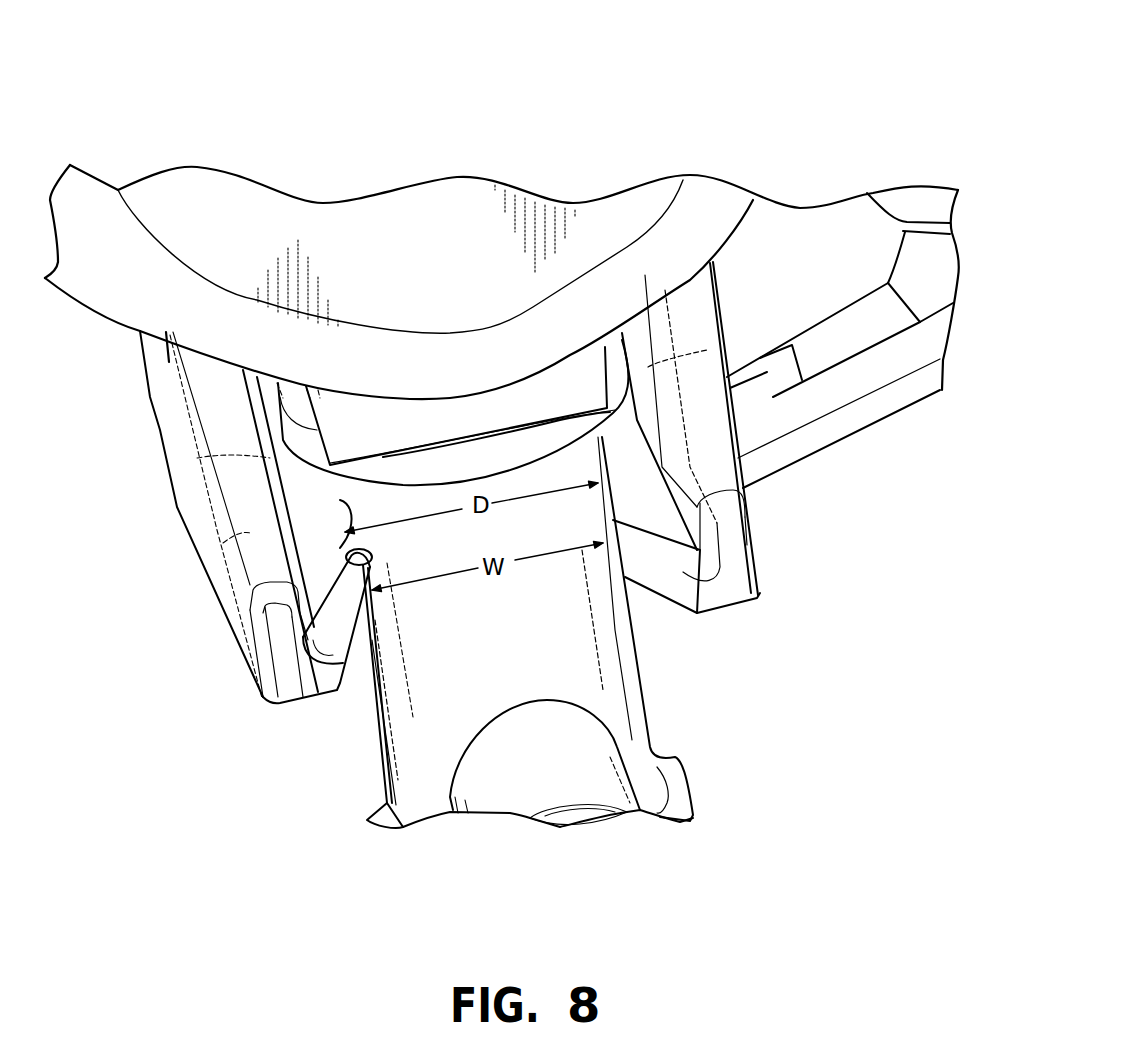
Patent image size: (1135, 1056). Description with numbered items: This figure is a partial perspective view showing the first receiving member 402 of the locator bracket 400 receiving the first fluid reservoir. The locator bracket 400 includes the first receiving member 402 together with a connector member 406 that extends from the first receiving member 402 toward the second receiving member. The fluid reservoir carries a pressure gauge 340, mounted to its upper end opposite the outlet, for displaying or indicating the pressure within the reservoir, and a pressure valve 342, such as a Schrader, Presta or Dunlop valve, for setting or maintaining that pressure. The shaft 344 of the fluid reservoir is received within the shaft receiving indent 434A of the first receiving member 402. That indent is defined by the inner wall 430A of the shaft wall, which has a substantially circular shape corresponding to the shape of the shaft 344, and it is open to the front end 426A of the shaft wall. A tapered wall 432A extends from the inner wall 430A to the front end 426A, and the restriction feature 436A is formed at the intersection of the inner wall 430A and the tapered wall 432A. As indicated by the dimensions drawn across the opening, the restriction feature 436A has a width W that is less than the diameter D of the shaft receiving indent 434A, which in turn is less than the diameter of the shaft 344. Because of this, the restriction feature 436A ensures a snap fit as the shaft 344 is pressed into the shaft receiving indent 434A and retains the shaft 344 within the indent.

The pressure gauge 340 is at (413, 238).
The pressure valve 342 is at (520, 768).
The shaft 344 is at (588, 633).
The locator bracket 400 is at (885, 437).
The first receiving member 402 is at (200, 603).
The connector member 406 is at (927, 163).
The front end 426A is at (298, 685).
The inner wall 430A is at (340, 500).
The tapered wall 432A is at (347, 657).
The shaft receiving indent 434A is at (426, 592).
The restriction feature 436A is at (350, 560).